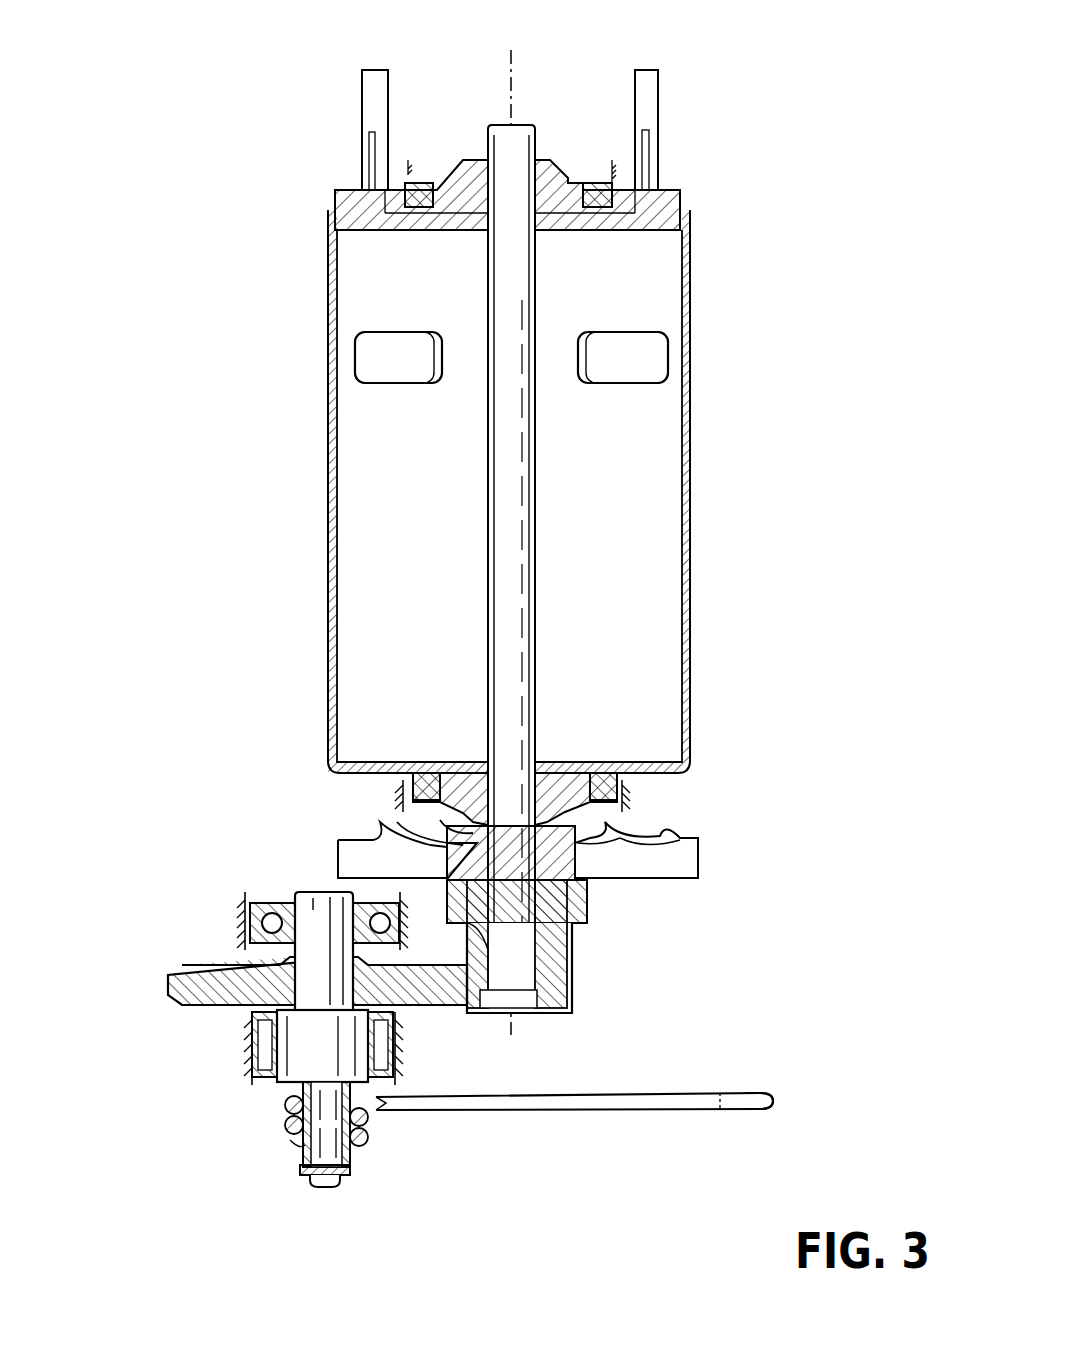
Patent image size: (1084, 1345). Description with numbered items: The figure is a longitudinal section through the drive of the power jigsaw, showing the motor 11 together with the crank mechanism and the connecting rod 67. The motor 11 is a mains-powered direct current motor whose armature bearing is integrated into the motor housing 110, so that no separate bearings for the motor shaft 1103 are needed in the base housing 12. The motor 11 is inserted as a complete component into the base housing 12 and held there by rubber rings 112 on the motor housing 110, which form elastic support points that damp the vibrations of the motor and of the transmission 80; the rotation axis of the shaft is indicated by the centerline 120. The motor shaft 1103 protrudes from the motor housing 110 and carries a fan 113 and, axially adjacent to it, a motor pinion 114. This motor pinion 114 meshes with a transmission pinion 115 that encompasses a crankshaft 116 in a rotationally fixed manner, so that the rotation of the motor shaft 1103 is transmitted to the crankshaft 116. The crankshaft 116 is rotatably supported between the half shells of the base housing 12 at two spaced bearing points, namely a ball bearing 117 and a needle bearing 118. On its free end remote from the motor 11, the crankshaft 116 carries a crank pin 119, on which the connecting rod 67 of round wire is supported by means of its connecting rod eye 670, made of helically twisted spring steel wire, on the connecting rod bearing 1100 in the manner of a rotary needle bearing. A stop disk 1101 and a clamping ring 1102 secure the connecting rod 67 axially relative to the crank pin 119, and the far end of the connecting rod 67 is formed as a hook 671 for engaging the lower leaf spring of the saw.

The axis of rotation 120 is at (511, 78).
The rubber rings 112 is at (600, 180).
The motor housing 110 is at (692, 292).
The motor 11 is at (574, 447).
The motor shaft 1103 is at (531, 612).
The fan 113 is at (683, 858).
The transmission 80 is at (447, 940).
The motor pinion 114 is at (563, 985).
The transmission pinion 115 is at (170, 986).
The crankshaft 116 is at (313, 906).
The ball bearing 117 is at (250, 928).
The base housing 12 is at (238, 910).
The needle bearing 118 is at (250, 1050).
The crank pin 119 is at (313, 1180).
The connecting rod bearing 1100 is at (290, 1140).
The connecting rod eye 670 is at (370, 1140).
The stop disk 1101 is at (355, 1167).
The clamping ring 1102 is at (340, 1186).
The connecting rod 67 is at (588, 1104).
The hook 671 is at (755, 1100).